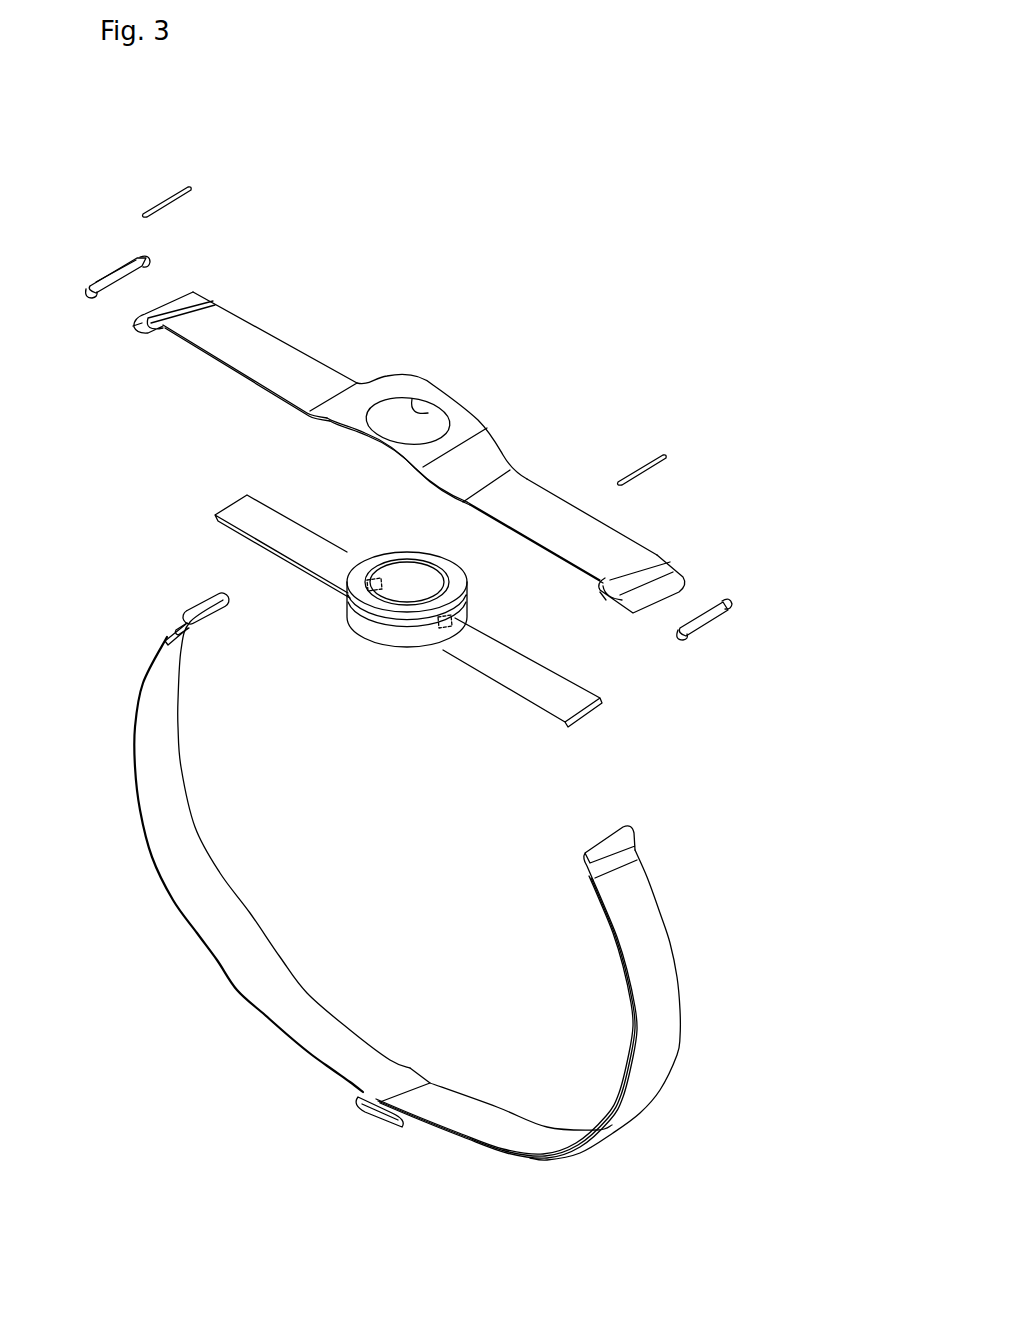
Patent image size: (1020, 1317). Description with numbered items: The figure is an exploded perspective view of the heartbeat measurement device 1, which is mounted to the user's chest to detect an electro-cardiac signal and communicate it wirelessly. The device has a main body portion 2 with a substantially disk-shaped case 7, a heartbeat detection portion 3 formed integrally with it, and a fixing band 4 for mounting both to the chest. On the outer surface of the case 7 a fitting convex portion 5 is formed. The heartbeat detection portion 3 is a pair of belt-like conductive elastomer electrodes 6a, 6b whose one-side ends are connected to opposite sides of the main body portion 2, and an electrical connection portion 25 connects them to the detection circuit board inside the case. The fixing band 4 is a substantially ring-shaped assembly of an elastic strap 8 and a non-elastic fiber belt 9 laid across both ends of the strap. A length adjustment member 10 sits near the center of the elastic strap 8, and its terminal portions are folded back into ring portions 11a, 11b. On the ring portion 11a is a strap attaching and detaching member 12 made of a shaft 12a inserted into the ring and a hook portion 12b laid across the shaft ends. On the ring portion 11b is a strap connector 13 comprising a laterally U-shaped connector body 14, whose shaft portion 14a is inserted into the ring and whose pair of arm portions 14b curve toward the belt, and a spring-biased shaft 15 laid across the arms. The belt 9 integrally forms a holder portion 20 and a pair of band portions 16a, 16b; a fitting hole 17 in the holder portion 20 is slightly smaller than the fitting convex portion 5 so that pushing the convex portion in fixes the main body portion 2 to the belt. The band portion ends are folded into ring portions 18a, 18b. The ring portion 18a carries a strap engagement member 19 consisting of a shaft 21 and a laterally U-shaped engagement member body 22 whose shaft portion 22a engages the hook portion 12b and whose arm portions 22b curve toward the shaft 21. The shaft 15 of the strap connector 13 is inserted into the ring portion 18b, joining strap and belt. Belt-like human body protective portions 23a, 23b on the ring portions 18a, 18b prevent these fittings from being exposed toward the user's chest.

The heartbeat measurement device 1 is at (586, 221).
The main body portion 2 is at (380, 652).
The heartbeat detection portion 3 is at (527, 710).
The fixing band 4 is at (682, 933).
The fitting convex portion 5 is at (408, 560).
The electrode 6a is at (291, 570).
The electrode 6b is at (490, 686).
The case 7 is at (360, 626).
The elastic strap 8 is at (233, 990).
The belt 9 is at (535, 477).
The length adjustment member 10 is at (372, 1125).
The ring portion 11a is at (172, 633).
The ring portion 11b is at (635, 828).
The strap attaching and detaching member 12 is at (186, 603).
The shaft 12a is at (186, 640).
The hook portion 12b is at (211, 604).
The strap connector 13 is at (727, 558).
The connector body 14 is at (742, 626).
The shaft portion 14a is at (708, 630).
The arm portion 14b is at (728, 597).
The shaft 15 is at (638, 450).
The band portion 16a is at (308, 352).
The band portion 16b is at (570, 512).
The fitting hole 17 is at (430, 410).
The ring portion 18a is at (152, 322).
The ring portion 18b is at (668, 568).
The strap engagement member 19 is at (118, 222).
The holder portion 20 is at (470, 400).
The shaft 21 is at (150, 210).
The engagement member body 22 is at (103, 257).
The shaft portion 22a is at (90, 278).
The arm portion 22b is at (142, 257).
The human body protective portion 23a is at (134, 326).
The human body protective portion 23b is at (633, 612).
The electrical connection portion 25 is at (375, 578).